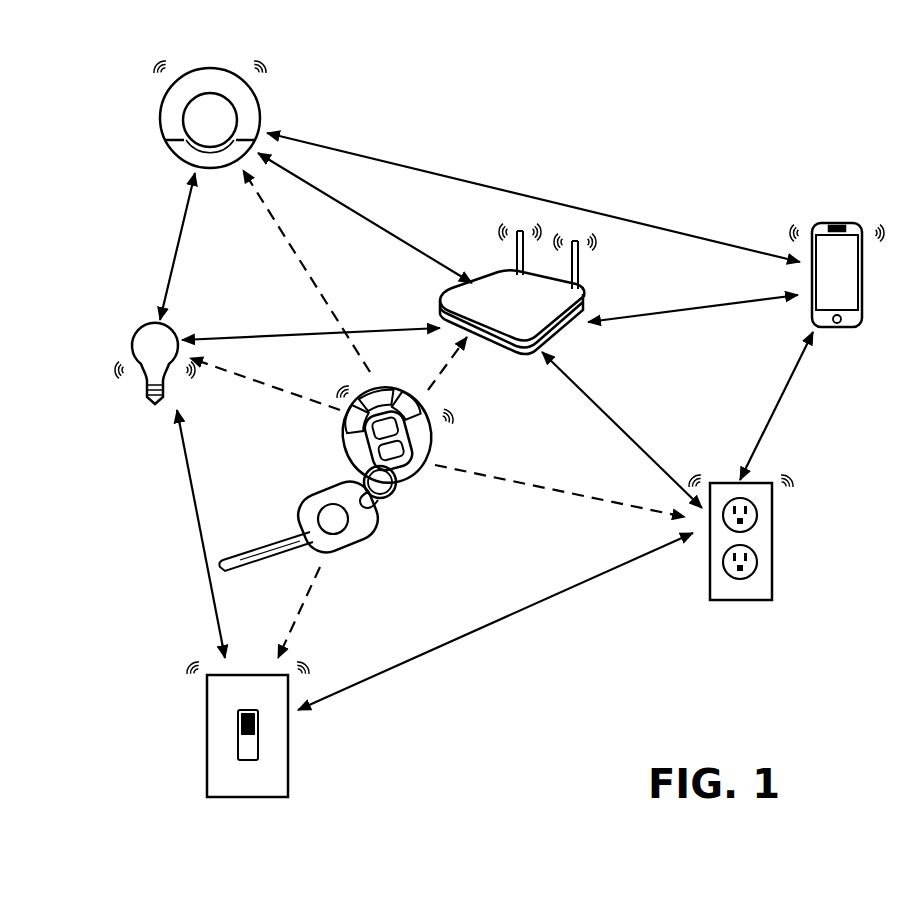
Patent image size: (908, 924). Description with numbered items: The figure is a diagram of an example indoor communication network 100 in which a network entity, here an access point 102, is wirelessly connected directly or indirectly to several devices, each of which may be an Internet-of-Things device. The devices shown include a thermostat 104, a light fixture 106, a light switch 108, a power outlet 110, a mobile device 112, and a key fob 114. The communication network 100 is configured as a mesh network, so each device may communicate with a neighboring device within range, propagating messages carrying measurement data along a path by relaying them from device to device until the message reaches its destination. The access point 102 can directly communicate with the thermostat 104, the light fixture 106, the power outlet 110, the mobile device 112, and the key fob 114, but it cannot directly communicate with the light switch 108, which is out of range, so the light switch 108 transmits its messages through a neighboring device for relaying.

The communication network 100 is at (74, 97).
The access point 102 is at (585, 291).
The thermostat 104 is at (200, 68).
The light fixture 106 is at (172, 331).
The light switch 108 is at (289, 748).
The power outlet 110 is at (773, 536).
The mobile device 112 is at (838, 222).
The key fob 114 is at (343, 445).